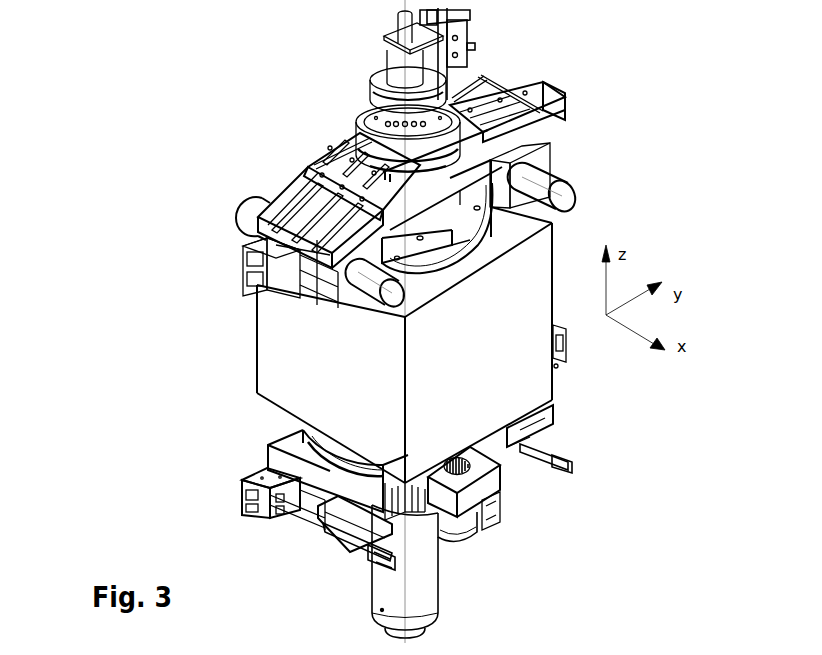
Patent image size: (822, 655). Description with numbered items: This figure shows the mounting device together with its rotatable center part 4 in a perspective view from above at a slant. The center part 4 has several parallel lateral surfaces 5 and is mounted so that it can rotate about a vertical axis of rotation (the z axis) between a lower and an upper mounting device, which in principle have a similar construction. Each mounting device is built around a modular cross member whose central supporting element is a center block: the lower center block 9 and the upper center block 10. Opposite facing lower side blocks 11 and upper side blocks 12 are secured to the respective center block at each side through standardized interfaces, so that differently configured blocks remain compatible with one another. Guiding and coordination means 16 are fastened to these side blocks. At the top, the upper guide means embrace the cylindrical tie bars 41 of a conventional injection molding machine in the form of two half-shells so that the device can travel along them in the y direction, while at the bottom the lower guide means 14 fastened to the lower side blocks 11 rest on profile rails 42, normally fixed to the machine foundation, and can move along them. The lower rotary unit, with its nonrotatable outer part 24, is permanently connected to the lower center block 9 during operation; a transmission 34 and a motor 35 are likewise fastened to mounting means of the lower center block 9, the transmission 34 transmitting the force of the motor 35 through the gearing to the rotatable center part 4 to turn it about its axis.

The center part 4 is at (241, 308).
The lateral surfaces 5 is at (300, 350).
The lower center block 9 is at (463, 530).
The upper center block 10 is at (395, 165).
The lower side blocks 11 is at (302, 452).
The upper side blocks 12 is at (300, 210).
The lower guide means 14 is at (337, 540).
The guiding and coordination means 16 is at (270, 483).
The nonrotatable outer part 24 is at (425, 585).
The transmission 34 is at (483, 485).
The motor 35 is at (498, 493).
The tie bars 41 is at (262, 218).
The profile rails 42 is at (372, 567).